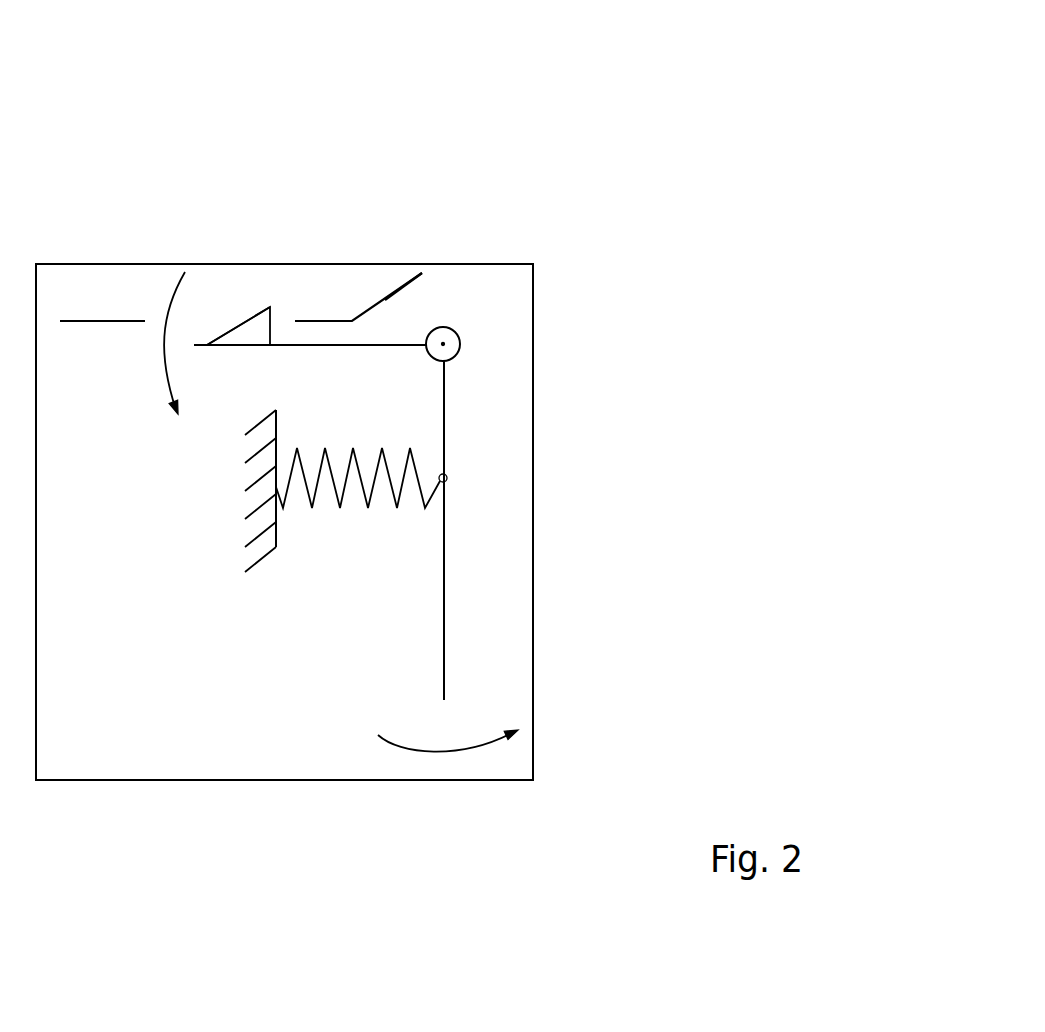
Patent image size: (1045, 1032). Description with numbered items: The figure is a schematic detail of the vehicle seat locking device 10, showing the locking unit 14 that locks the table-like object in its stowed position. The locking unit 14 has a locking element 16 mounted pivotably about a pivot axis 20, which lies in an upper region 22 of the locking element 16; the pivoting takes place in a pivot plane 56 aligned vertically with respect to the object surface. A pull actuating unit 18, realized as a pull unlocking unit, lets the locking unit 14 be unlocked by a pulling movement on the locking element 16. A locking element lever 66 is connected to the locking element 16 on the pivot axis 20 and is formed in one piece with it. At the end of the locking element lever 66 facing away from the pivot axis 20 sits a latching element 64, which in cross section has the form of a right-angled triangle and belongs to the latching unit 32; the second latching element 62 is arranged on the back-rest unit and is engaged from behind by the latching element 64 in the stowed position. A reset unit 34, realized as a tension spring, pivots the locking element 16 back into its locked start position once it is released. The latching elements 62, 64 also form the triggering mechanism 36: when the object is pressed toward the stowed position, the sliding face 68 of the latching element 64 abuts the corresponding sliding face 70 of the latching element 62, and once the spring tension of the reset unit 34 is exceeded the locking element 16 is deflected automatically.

The vehicle seat locking device 10 is at (638, 104).
The locking unit 14 is at (678, 128).
The locking element 16 is at (445, 602).
The pull actuating unit 18 is at (690, 297).
The pivot axis 20 is at (453, 344).
The upper region 22 is at (576, 348).
The latching unit 32 is at (310, 280).
The reset unit 34 is at (320, 521).
The triggering mechanism 36 is at (430, 319).
The pivot plane 56 is at (108, 264).
The latching element 62 is at (391, 297).
The latching element 64 is at (270, 307).
The locking element lever 66 is at (387, 350).
The sliding face 68 is at (240, 322).
The sliding face 70 is at (411, 296).